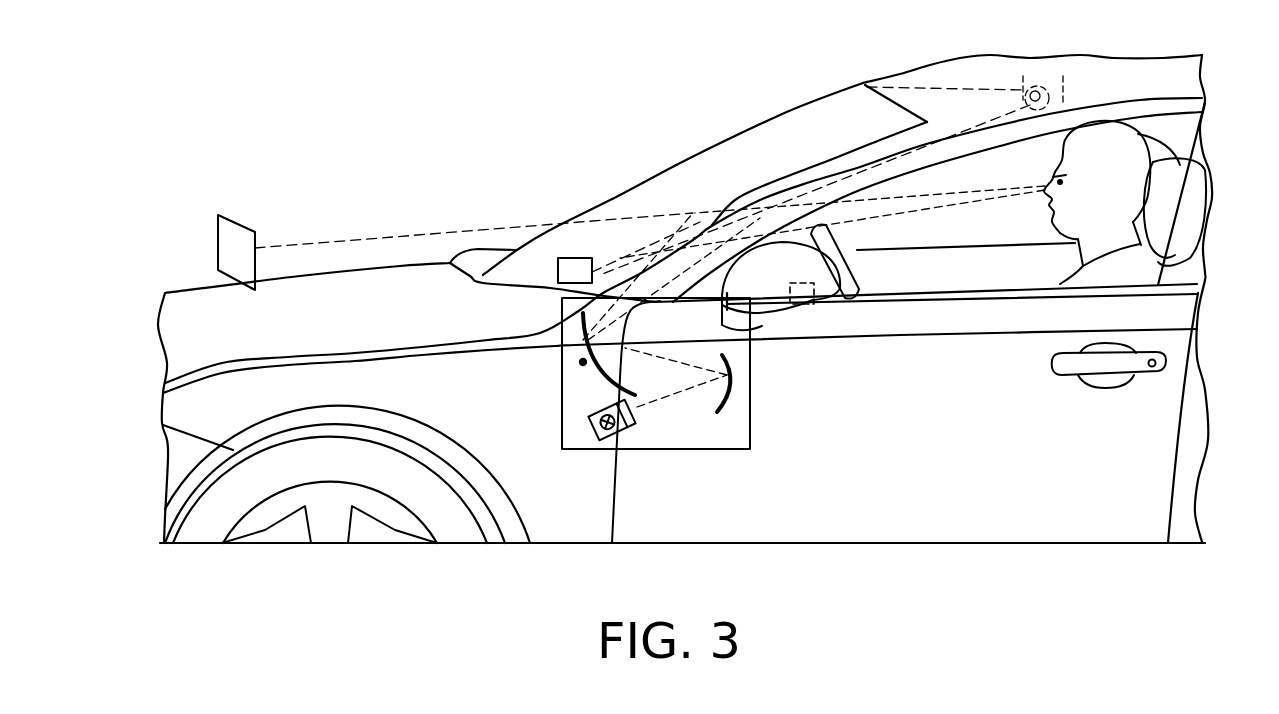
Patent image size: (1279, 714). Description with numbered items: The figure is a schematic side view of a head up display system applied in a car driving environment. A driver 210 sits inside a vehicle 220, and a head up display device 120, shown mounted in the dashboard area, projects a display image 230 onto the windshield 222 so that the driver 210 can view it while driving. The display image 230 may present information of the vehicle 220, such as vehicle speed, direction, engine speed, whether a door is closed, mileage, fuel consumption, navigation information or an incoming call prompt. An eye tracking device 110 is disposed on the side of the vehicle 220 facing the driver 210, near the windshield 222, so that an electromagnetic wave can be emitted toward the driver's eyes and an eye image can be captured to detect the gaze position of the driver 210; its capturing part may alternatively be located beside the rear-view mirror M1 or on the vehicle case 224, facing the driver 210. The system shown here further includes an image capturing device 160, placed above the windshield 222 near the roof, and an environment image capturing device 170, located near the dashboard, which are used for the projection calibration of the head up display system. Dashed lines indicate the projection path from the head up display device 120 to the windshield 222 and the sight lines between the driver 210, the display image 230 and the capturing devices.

The eye tracking device 110 is at (558, 272).
The head up display device 120 is at (752, 403).
The image capturing device 160 is at (1060, 92).
The environment image capturing device 170 is at (803, 306).
The driver 210 is at (1130, 186).
The vehicle 220 is at (187, 310).
The windshield 222 is at (797, 133).
The vehicle case 224 is at (905, 145).
The display image 230 is at (240, 215).
The rear-view mirror M1 is at (850, 297).